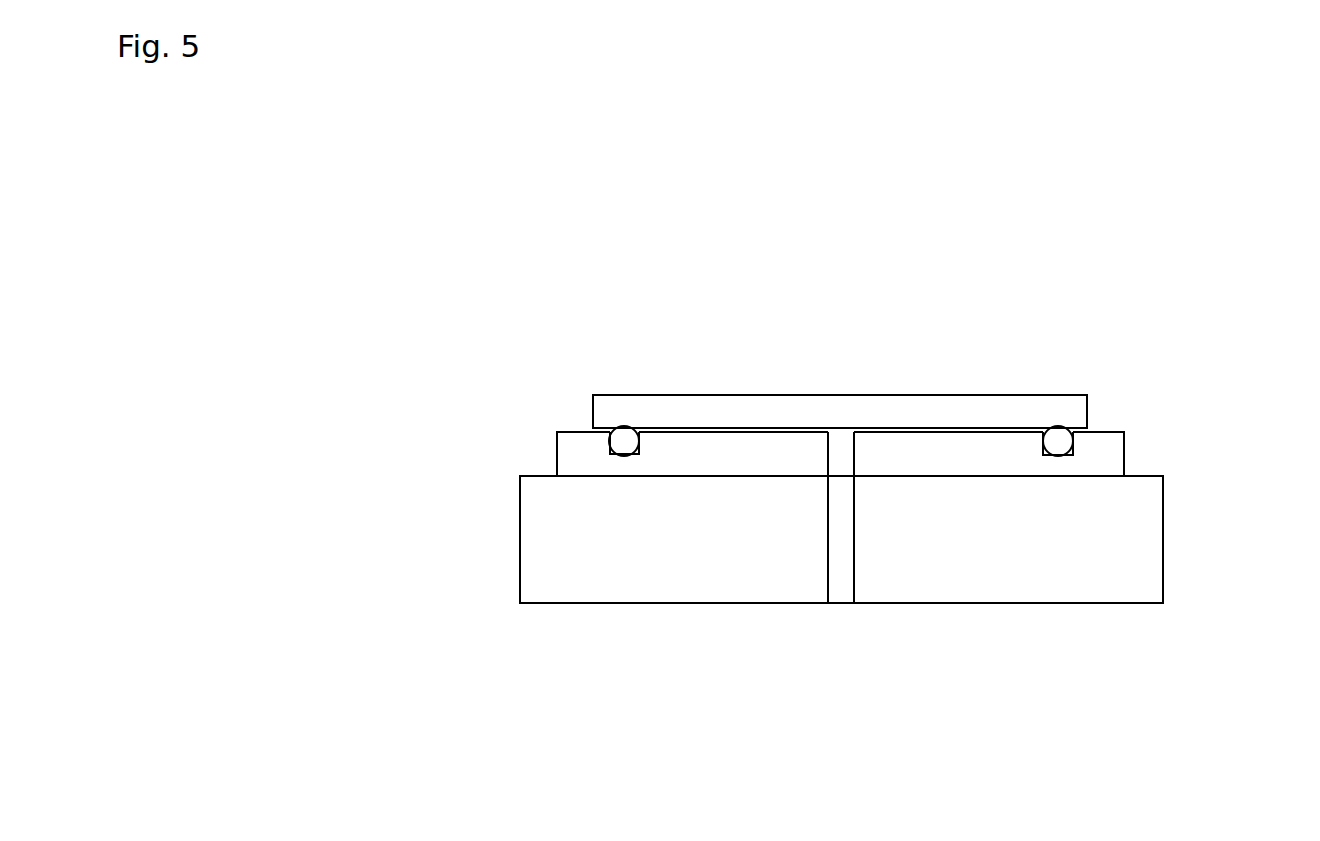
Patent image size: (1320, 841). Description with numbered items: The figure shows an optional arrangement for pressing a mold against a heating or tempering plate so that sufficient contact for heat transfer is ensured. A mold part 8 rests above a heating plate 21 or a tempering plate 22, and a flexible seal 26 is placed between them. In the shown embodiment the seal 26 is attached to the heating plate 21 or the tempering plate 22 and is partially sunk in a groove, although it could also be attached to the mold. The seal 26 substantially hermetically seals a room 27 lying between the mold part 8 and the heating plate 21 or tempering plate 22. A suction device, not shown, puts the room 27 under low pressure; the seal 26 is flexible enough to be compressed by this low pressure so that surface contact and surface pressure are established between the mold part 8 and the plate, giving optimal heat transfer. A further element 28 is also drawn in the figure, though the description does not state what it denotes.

The mold part 8 is at (937, 405).
The heating plate 21 is at (725, 450).
The tempering plate 22 is at (725, 450).
The flexible seal 26 is at (620, 438).
The room 27 is at (834, 427).
The pin 28 is at (837, 562).